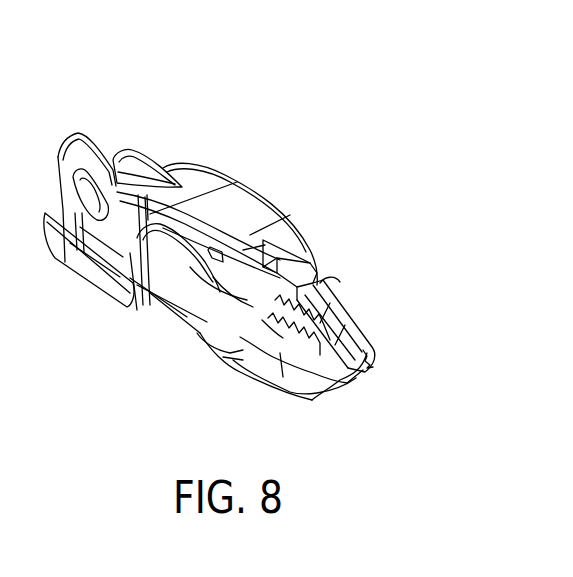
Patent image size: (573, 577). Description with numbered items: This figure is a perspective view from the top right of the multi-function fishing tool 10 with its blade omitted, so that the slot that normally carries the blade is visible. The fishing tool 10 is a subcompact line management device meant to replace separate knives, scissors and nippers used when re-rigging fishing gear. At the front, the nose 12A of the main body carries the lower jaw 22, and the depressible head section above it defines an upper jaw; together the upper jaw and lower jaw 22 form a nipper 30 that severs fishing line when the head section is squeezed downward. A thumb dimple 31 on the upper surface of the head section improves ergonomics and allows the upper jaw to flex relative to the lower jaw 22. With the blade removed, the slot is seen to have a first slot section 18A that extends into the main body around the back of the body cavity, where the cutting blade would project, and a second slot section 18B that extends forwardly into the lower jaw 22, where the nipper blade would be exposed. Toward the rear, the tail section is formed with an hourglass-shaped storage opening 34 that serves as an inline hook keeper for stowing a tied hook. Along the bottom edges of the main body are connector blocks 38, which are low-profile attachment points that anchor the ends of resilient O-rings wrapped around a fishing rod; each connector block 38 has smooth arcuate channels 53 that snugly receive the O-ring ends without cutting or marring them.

The multi-function fishing tool 10 is at (361, 131).
The nose 12A is at (383, 272).
The first slot section 18A is at (200, 278).
The second slot section 18B is at (262, 322).
The lower jaw 22 is at (310, 350).
The nipper 30 is at (370, 423).
The thumb dimple 31 is at (313, 273).
The storage opening 34 is at (97, 207).
The connector blocks 38 is at (102, 273).
The arcuate channels 53 is at (145, 297).